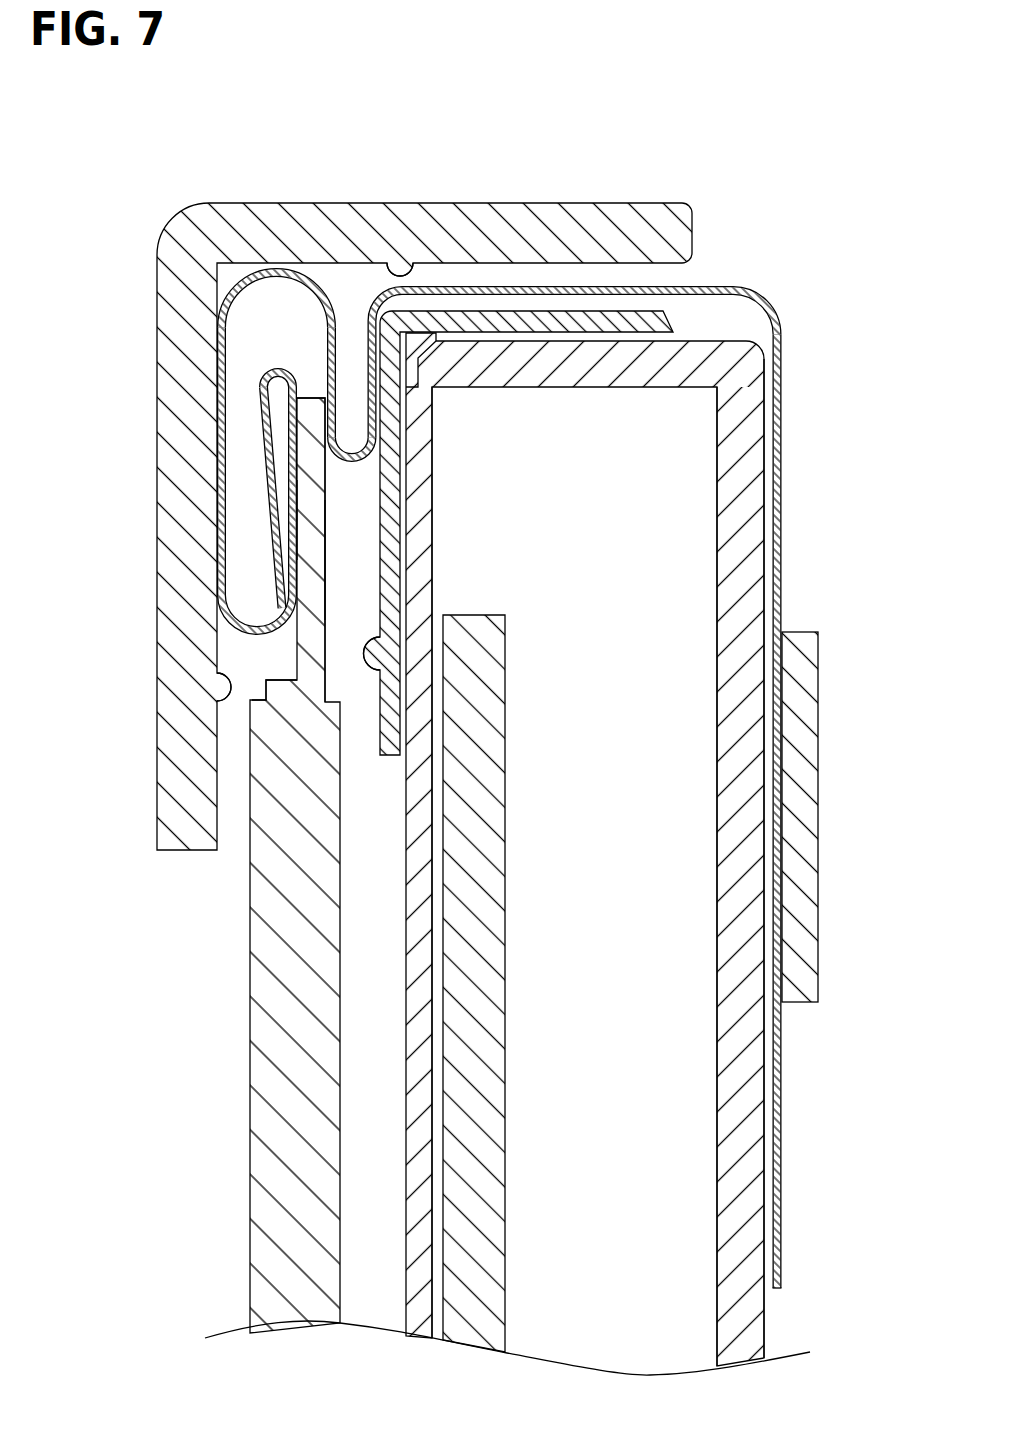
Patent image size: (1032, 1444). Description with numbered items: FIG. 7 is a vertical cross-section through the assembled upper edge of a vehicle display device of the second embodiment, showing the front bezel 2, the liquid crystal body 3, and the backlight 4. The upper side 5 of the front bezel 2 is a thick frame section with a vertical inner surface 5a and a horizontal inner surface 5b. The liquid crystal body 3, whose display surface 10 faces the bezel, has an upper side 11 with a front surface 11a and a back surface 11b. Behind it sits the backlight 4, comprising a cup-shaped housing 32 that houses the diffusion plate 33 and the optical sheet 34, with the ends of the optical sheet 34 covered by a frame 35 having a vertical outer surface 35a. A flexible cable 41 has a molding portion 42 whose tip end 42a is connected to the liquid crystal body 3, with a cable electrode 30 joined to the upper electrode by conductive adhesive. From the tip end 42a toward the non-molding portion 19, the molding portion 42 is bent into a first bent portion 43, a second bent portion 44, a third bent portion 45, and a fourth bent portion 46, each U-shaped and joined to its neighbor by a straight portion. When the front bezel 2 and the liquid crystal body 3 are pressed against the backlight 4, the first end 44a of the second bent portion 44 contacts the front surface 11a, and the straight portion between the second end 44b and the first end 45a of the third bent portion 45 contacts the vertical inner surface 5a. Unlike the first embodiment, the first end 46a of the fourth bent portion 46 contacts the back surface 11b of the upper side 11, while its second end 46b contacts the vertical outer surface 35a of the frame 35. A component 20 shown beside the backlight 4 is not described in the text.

The front bezel 2 is at (165, 217).
The liquid crystal body 3 is at (216, 1019).
The backlight 4 is at (716, 311).
The upper side 5 is at (187, 270).
The vertical inner surface 5a is at (228, 700).
The horizontal inner surface 5b is at (402, 262).
The display surface 10 is at (250, 1106).
The upper side 11 is at (307, 418).
The front surface 11a is at (278, 520).
The back surface 11b is at (328, 563).
The non-molding portion 19 is at (574, 288).
The sealing member 20 is at (820, 737).
The cable electrode 30 is at (410, 503).
The housing 32 is at (717, 578).
The diffusion plate 33 is at (505, 614).
The optical sheet 34 is at (433, 583).
The frame 35 is at (676, 326).
The vertical outer surface 35a is at (380, 672).
The flexible cable 41 is at (803, 400).
The molding portion 42 is at (346, 293).
The tip end 42a is at (296, 484).
The first bent portion 43 is at (283, 363).
The second bent portion 44 is at (250, 640).
The first end 44a is at (296, 704).
The second end 44b is at (218, 598).
The third bent portion 45 is at (272, 272).
The first end 45a is at (213, 317).
The fourth bent portion 46 is at (302, 484).
The first end 46a is at (333, 423).
The second end 46b is at (383, 446).